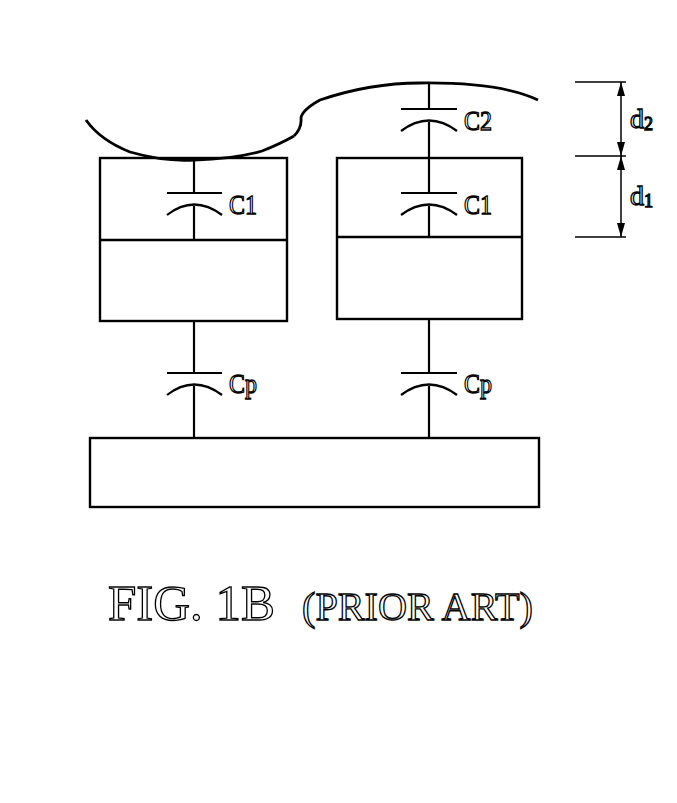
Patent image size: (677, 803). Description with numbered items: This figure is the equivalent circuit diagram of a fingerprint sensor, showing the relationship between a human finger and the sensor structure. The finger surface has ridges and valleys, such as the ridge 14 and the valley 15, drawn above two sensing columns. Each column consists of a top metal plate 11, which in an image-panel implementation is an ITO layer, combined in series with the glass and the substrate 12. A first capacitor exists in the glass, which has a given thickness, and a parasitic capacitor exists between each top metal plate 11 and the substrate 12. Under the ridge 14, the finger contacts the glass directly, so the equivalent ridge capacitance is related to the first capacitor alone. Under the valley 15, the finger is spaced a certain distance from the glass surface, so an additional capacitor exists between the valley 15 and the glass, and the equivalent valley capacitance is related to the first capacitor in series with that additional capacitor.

The top metal plate 11 is at (100, 307).
The substrate 12 is at (539, 467).
The ridge 14 is at (84, 132).
The valley 15 is at (500, 86).